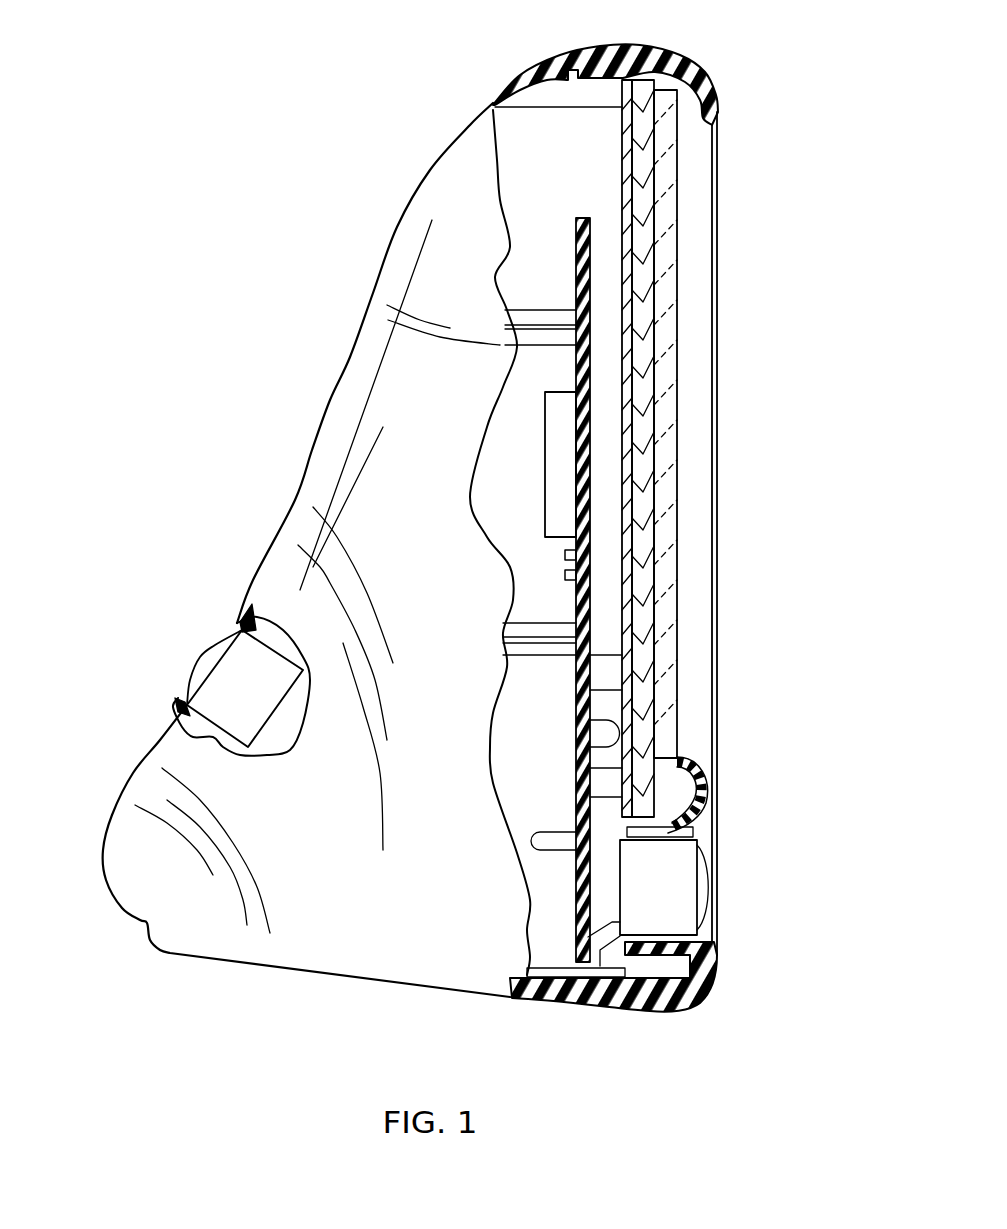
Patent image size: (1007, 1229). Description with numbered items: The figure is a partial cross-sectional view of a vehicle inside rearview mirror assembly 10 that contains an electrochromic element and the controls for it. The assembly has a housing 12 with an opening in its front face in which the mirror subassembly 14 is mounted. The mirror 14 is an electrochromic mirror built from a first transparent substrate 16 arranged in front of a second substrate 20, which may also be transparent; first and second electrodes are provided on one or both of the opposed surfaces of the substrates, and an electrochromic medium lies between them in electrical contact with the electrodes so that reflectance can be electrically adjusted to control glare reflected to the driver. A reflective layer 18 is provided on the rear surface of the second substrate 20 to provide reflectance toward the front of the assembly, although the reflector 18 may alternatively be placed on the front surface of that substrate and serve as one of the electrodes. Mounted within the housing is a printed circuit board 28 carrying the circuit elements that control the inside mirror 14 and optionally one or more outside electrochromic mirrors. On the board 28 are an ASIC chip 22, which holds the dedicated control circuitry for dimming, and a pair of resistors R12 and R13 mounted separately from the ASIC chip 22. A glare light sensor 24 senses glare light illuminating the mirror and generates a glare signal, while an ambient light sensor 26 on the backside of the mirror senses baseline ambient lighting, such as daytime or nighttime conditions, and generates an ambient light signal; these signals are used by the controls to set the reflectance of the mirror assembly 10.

The mirror assembly 10 is at (262, 226).
The housing 12 is at (130, 780).
The mirror subassembly 14 is at (683, 400).
The first transparent substrate 16 is at (670, 480).
The reflective layer 18 is at (625, 133).
The second substrate 20 is at (643, 567).
The ASIC chip 22 is at (545, 457).
The glare light sensor 24 is at (703, 882).
The ambient light sensor 26 is at (205, 660).
The printed circuit board 28 is at (577, 267).
The resistor R12 is at (563, 556).
The resistor R13 is at (563, 574).